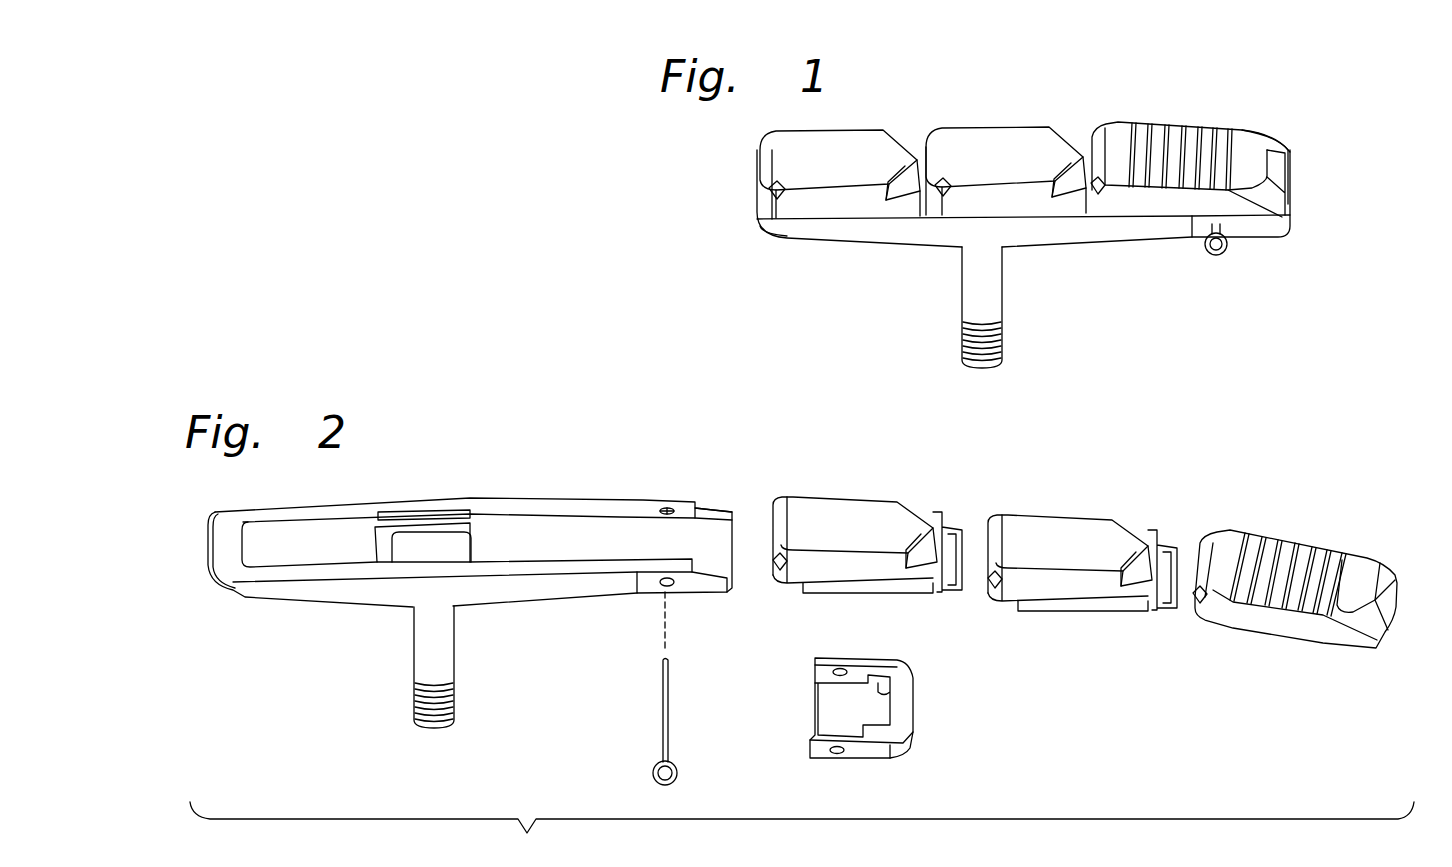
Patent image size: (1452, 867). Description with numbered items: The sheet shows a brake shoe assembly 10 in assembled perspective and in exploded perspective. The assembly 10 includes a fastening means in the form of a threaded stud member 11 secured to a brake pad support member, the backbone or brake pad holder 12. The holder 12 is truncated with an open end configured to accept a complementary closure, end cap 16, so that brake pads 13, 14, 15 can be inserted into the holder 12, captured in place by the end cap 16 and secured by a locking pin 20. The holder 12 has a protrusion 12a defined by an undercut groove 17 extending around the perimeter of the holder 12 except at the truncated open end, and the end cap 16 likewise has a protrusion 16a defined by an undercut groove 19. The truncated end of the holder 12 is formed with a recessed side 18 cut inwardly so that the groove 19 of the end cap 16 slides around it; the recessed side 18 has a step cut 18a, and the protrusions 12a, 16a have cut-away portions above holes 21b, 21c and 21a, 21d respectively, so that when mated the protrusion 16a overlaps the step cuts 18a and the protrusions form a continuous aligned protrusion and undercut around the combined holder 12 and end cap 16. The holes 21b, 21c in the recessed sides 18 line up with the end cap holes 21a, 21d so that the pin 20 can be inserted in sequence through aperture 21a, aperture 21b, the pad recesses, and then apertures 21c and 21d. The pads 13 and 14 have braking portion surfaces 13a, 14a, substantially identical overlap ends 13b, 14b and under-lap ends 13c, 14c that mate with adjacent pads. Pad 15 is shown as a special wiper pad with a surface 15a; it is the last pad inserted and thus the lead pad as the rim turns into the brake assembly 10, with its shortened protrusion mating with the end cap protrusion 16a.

In FIG. 1, the brake shoe assembly 10 is at (742, 212).
In FIG. 2, the brake shoe assembly 10 is at (743, 438).
In FIG. 1, the threaded stud member 11 is at (1002, 296).
In FIG. 2, the threaded stud member 11 is at (455, 652).
In FIG. 1, the brake pad holder 12 is at (1016, 220).
In FIG. 2, the brake pad holder 12 is at (499, 577).
In FIG. 1, the protrusion 12a is at (818, 226).
In FIG. 2, the protrusion 12a is at (575, 507).
In FIG. 1, the brake pad 13 is at (840, 149).
In FIG. 2, the brake pad 13 is at (886, 541).
In FIG. 1, the braking portion surface 13a is at (823, 147).
In FIG. 2, the braking portion surface 13a is at (858, 509).
In FIG. 2, the overlap end 13b is at (790, 584).
In FIG. 2, the under-lap end 13c is at (963, 540).
In FIG. 1, the brake pad 14 is at (1006, 148).
In FIG. 2, the brake pad 14 is at (1093, 553).
In FIG. 1, the braking portion surface 14a is at (985, 145).
In FIG. 2, the braking portion surface 14a is at (1059, 521).
In FIG. 2, the overlap end 14b is at (992, 604).
In FIG. 2, the under-lap end 14c is at (1160, 541).
In FIG. 1, the brake pad 15 is at (1216, 147).
In FIG. 2, the brake pad 15 is at (1314, 575).
In FIG. 1, the surface 15a is at (1241, 150).
In FIG. 2, the surface 15a is at (1351, 570).
In FIG. 1, the end cap 16 is at (1287, 209).
In FIG. 2, the end cap 16 is at (906, 718).
In FIG. 1, the protrusion 16a is at (1292, 194).
In FIG. 2, the protrusion 16a is at (905, 700).
In FIG. 2, the undercut groove 17 is at (517, 528).
In FIG. 2, the recessed side 18 is at (713, 589).
In FIG. 2, the step cut 18a is at (715, 508).
In FIG. 2, the undercut groove 19 is at (878, 684).
In FIG. 1, the locking pin 20 is at (1211, 256).
In FIG. 2, the locking pin 20 is at (662, 714).
In FIG. 2, the hole 21a is at (837, 755).
In FIG. 2, the hole 21b is at (668, 590).
In FIG. 2, the hole 21c is at (668, 506).
In FIG. 2, the hole 21d is at (841, 668).